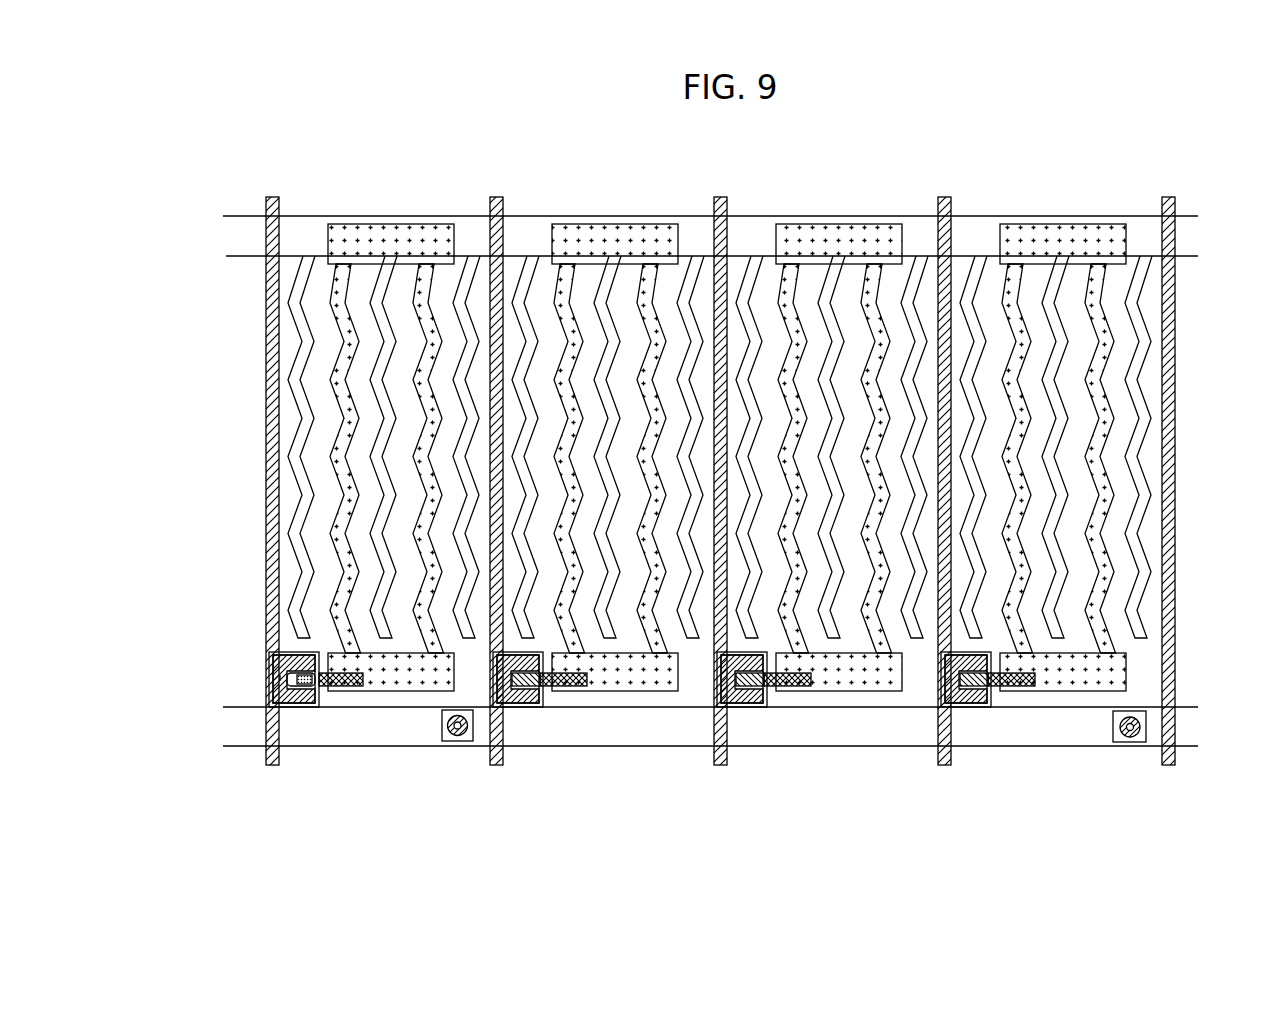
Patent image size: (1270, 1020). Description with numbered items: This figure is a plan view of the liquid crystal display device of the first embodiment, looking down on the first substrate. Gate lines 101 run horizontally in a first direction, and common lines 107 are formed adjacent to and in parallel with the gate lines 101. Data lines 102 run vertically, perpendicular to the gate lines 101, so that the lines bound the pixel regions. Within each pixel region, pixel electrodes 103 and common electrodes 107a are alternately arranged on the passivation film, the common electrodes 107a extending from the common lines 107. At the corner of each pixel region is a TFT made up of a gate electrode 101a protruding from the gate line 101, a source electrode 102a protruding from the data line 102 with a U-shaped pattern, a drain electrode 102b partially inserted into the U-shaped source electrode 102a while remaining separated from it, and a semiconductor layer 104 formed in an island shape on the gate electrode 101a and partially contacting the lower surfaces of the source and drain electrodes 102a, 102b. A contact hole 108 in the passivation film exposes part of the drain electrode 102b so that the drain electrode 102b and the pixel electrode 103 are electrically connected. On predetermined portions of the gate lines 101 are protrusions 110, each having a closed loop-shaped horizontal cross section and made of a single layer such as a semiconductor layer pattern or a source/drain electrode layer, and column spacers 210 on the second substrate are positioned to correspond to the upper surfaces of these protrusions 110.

The gate line 101 is at (397, 725).
The gate electrode 101a is at (300, 698).
The data line 102 is at (272, 205).
The source electrode 102a is at (298, 652).
The drain electrode 102b is at (323, 693).
The pixel electrode 103 is at (340, 398).
The semiconductor layer 104 is at (272, 662).
The common line 107 is at (471, 235).
The common electrode 107a is at (305, 350).
The contact hole 108 is at (573, 685).
The protrusion 110 is at (460, 738).
The column spacer 210 is at (433, 740).
The thin film transistor TFT is at (269, 708).